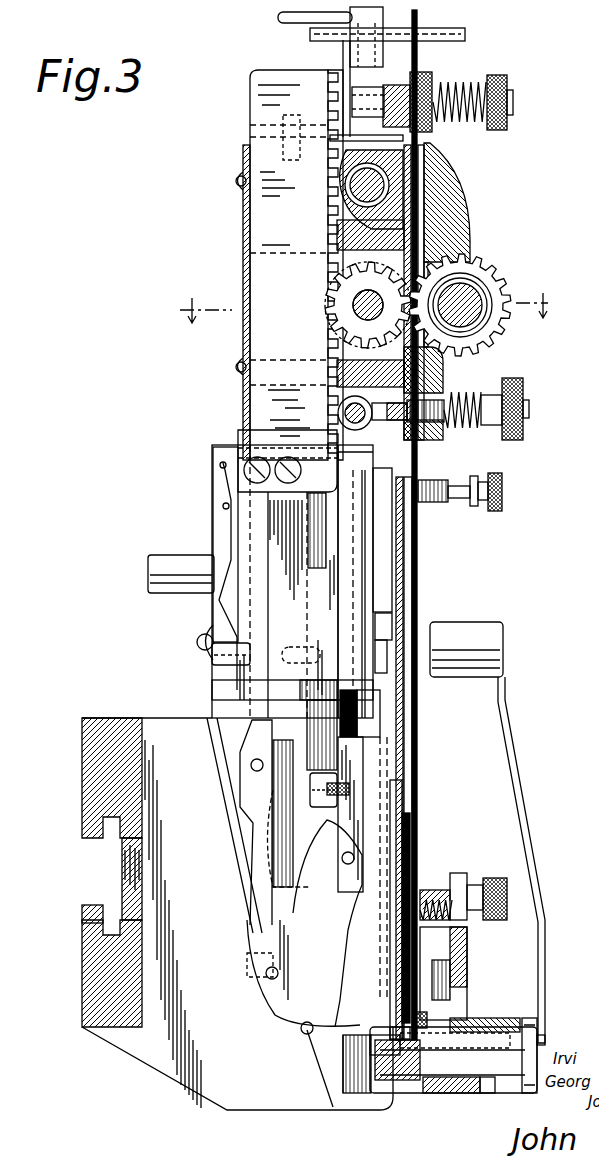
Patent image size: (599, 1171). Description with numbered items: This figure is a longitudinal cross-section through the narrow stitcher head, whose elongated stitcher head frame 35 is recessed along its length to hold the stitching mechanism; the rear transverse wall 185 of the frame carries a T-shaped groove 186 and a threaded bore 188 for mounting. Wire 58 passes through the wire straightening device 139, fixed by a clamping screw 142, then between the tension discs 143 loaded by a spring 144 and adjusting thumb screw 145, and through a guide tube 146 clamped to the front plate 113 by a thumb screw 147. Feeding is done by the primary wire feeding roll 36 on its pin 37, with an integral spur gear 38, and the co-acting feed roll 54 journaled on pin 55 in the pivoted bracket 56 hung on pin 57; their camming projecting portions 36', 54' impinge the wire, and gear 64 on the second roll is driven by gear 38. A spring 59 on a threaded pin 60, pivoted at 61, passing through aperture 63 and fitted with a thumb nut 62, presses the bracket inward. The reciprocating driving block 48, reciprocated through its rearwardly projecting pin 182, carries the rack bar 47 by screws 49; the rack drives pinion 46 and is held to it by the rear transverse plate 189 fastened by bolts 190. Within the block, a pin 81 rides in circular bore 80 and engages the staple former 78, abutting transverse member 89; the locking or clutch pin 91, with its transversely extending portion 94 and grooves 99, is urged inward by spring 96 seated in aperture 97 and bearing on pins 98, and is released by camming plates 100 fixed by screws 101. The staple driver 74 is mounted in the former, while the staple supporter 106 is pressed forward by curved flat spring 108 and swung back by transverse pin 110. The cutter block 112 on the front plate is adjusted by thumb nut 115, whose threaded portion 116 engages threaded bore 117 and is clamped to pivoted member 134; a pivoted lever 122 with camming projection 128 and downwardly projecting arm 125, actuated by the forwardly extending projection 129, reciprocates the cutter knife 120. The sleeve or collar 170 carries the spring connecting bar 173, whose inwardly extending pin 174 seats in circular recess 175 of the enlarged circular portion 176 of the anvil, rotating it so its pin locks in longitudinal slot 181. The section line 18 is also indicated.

The clamping screw 142 is at (292, 24).
The wire straightening device 139 is at (432, 36).
The wire 58 is at (418, 56).
The discs 143 is at (420, 90).
The spring 144 is at (432, 82).
The adjusting thumb screw 145 is at (508, 92).
The rack bar 47 is at (256, 232).
The rear transverse plate 189 is at (247, 210).
The bolts 190 is at (243, 176).
The primary wire feeding roll 36 is at (312, 265).
The pin 57 is at (378, 182).
The front plate 113 is at (400, 548).
The guide tube 146 is at (419, 574).
The pivoted bracket 56 is at (450, 188).
The camming projecting portion 36' is at (469, 281).
The pinion 46 is at (334, 306).
The pin 37 is at (352, 320).
The spur gear 38 is at (333, 268).
The co-acting feed roll 54 is at (465, 306).
The camming projecting portion 54' is at (498, 298).
The pin 55 is at (470, 298).
The gear 64 is at (475, 272).
The section line 18 is at (366, 309).
The aperture 63 is at (432, 380).
The pivot 61 is at (340, 412).
The spring 59 is at (466, 392).
The thumb nut 62 is at (524, 394).
The threaded pin 60 is at (530, 410).
The screws 49 is at (262, 456).
The staple driver 74 is at (388, 726).
The circular bore 80 is at (358, 528).
The pin 81 is at (355, 712).
The reciprocating driving block 48 is at (216, 520).
The spring 96 is at (229, 538).
The aperture 97 is at (221, 466).
The pins 98 is at (224, 505).
The rearwardly projecting pin 182 is at (150, 574).
The thumb screw 147 is at (503, 493).
The sleeve or collar 170 is at (470, 630).
The spring connecting bar 173 is at (522, 774).
The locking or clutch pin 91 is at (284, 646).
The transversely extending portion 94 is at (225, 657).
The grooves 99 is at (222, 660).
The curved flat spring 108 is at (210, 706).
The rear transverse wall 185 is at (88, 996).
The T-shaped groove 186 is at (108, 922).
The threaded bore 188 is at (134, 896).
The stitcher head frame 35 is at (162, 1068).
The camming plates 100 is at (255, 832).
The screws 101 is at (260, 762).
The transverse member 89 is at (312, 790).
The staple former 78 is at (358, 806).
The staple supporter 106 is at (262, 1005).
The transverse pin 110 is at (268, 976).
The threaded bore 117 is at (443, 892).
The cutter block 112 is at (425, 892).
The threaded portion 116 is at (462, 884).
The thumb nut 115 is at (508, 892).
The pivoted lever 122 is at (440, 978).
The pivoted member 134 is at (470, 958).
The downwardly projecting arm 125 is at (430, 1012).
The circular recess 175 is at (522, 1048).
The enlarged circular portion 176 is at (528, 1096).
The inwardly extending pin 174 is at (545, 1040).
The forwardly extending projection 129 is at (450, 1096).
The longitudinal slot 181 is at (478, 1096).
The camming projection 128 is at (422, 1088).
The cutter knife 120 is at (405, 1040).